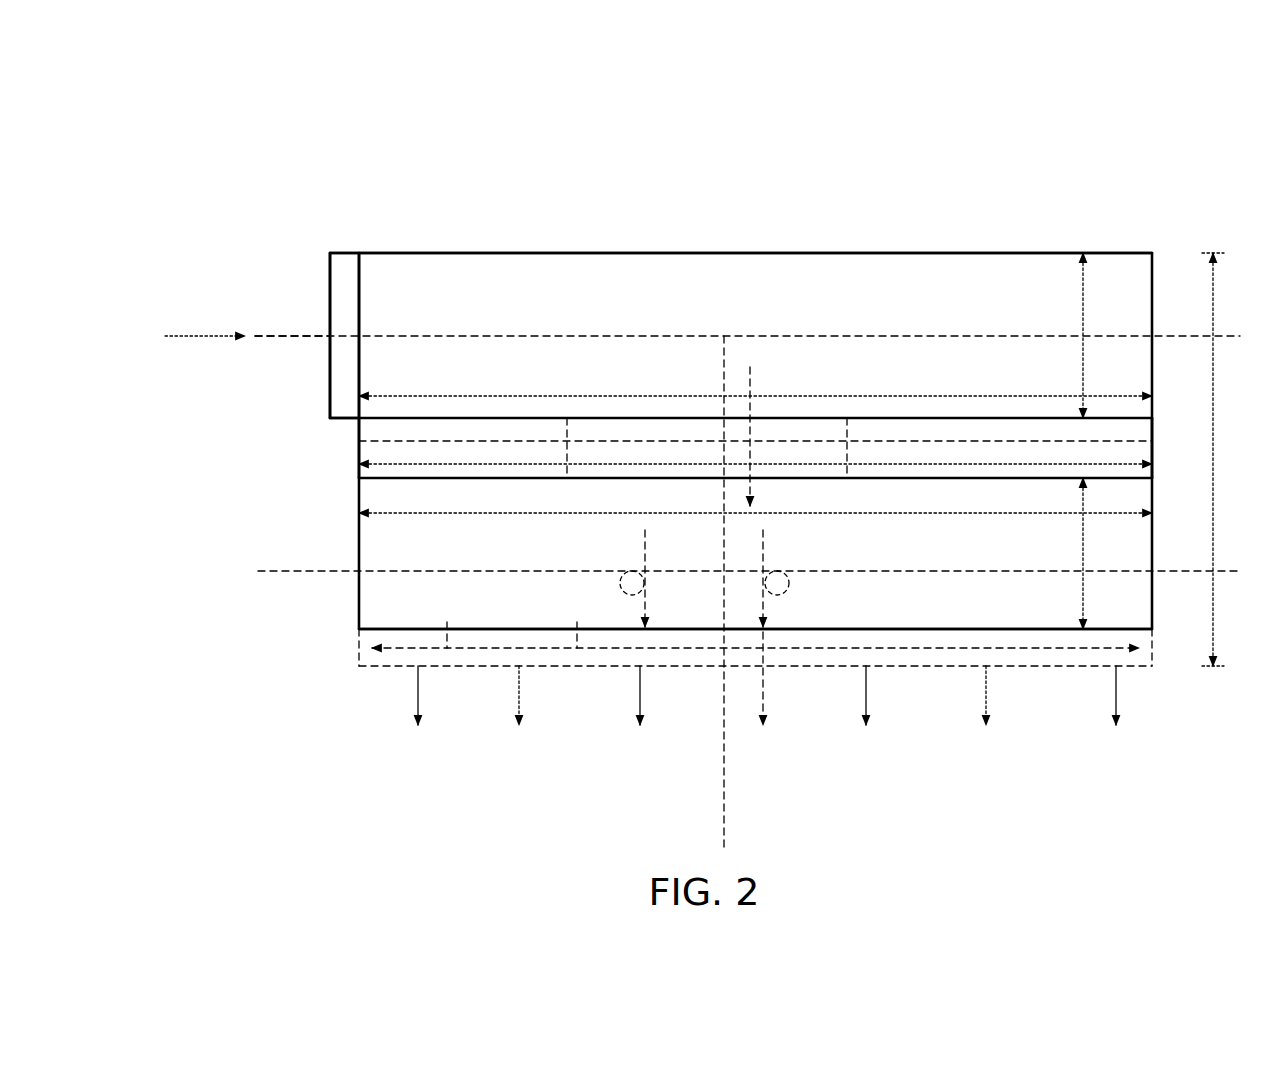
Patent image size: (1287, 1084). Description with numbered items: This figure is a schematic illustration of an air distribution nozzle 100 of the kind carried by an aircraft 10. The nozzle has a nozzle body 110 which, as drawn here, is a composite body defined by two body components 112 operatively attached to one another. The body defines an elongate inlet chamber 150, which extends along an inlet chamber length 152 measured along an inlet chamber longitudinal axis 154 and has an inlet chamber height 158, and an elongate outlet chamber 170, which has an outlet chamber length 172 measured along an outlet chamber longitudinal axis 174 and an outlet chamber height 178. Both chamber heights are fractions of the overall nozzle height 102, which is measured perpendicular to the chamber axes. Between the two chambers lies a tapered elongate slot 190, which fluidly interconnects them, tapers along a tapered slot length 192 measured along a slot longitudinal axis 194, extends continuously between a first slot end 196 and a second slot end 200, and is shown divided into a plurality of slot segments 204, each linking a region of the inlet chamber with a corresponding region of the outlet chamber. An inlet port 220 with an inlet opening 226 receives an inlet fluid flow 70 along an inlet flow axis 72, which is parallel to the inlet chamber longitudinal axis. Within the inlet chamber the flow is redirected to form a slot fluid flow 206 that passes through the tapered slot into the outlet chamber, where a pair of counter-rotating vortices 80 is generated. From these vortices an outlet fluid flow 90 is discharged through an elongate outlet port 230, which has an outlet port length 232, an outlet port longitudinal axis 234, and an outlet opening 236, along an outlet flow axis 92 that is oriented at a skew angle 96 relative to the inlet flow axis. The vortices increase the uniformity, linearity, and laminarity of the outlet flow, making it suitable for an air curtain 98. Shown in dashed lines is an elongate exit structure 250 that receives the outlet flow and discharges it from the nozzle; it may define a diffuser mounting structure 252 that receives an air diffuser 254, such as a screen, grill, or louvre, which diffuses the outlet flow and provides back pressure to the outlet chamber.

The aircraft 10 is at (347, 799).
The inlet fluid flow 70 is at (202, 335).
The inlet flow axis 72 is at (284, 346).
The counter-rotating vortices 80 is at (645, 606).
The outlet fluid flow 90 is at (418, 700).
The outlet flow axis 92 is at (724, 811).
The skew angle 96 is at (722, 372).
The air curtain 98 is at (1146, 767).
The air distribution nozzle 100 is at (405, 131).
The overall nozzle height 102 is at (1213, 490).
The nozzle body 110 is at (407, 251).
The body components 112 is at (460, 252).
The elongate inlet chamber 150 is at (588, 280).
The inlet chamber length 152 is at (425, 396).
The inlet chamber longitudinal axis 154 is at (926, 335).
The inlet chamber height 158 is at (1083, 305).
The elongate outlet chamber 170 is at (403, 553).
The outlet chamber length 172 is at (843, 520).
The outlet chamber longitudinal axis 174 is at (975, 578).
The outlet chamber height 178 is at (1083, 545).
The tapered elongate slot 190 is at (357, 441).
The tapered slot length 192 is at (455, 464).
The slot longitudinal axis 194 is at (905, 441).
The first slot end 196 is at (359, 428).
The second slot end 200 is at (1152, 441).
The slot segments 204 is at (815, 476).
The slot fluid flow 206 is at (750, 382).
The inlet port 220 is at (329, 252).
The inlet opening 226 is at (306, 303).
The elongate outlet port 230 is at (355, 629).
The outlet port length 232 is at (445, 622).
The outlet port longitudinal axis 234 is at (575, 622).
The outlet opening 236 is at (922, 699).
The elongate exit structure 250 is at (355, 648).
The diffuser mounting structure 252 is at (473, 661).
The air diffuser 254 is at (585, 653).